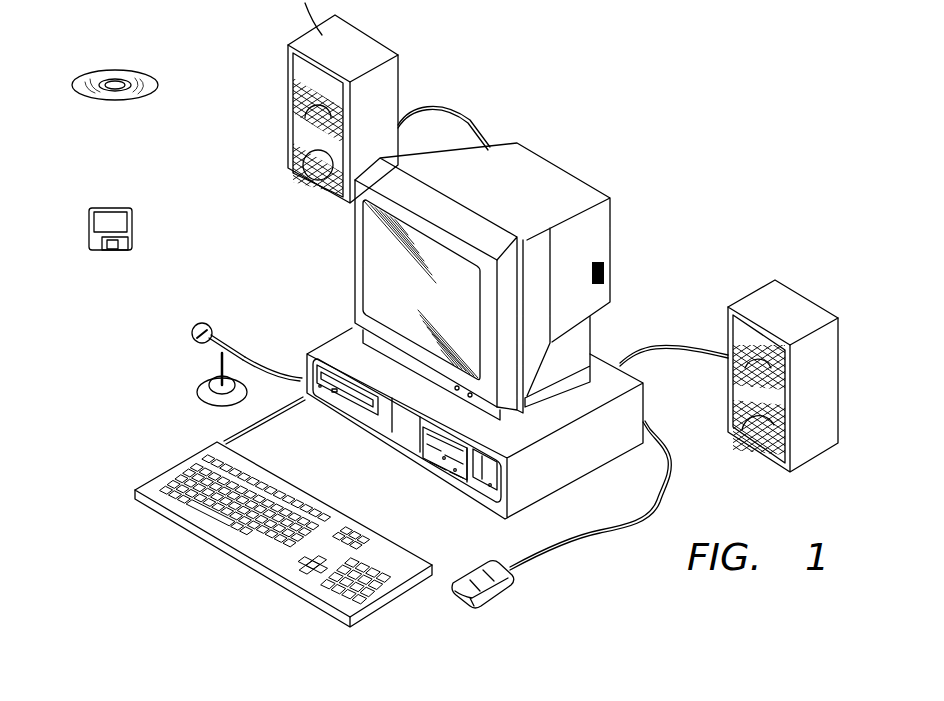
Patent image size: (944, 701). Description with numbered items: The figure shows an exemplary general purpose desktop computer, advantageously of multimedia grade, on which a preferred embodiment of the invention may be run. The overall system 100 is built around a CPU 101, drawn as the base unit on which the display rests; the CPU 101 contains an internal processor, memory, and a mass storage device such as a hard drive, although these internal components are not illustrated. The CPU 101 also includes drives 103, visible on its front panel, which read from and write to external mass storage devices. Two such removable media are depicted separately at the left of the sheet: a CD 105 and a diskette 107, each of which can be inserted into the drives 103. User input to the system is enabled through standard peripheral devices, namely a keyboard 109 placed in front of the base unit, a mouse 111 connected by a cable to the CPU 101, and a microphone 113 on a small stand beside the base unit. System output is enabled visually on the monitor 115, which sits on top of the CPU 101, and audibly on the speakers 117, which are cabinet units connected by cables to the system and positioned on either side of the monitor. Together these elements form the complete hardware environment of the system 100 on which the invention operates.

The system 100 is at (622, 80).
The CPU 101 is at (338, 338).
The drives 103 is at (358, 397).
The CD 105 is at (113, 73).
The diskette 107 is at (110, 208).
The keyboard 109 is at (153, 485).
The mouse 111 is at (490, 600).
The microphone 113 is at (197, 324).
The monitor 115 is at (560, 177).
The speakers 117 is at (797, 303).